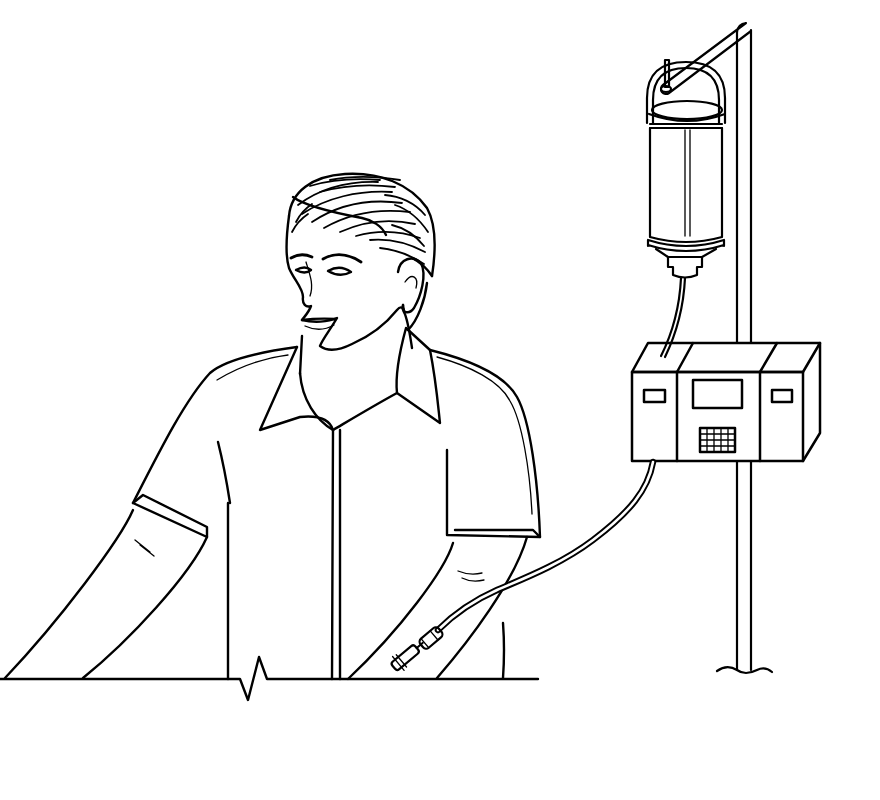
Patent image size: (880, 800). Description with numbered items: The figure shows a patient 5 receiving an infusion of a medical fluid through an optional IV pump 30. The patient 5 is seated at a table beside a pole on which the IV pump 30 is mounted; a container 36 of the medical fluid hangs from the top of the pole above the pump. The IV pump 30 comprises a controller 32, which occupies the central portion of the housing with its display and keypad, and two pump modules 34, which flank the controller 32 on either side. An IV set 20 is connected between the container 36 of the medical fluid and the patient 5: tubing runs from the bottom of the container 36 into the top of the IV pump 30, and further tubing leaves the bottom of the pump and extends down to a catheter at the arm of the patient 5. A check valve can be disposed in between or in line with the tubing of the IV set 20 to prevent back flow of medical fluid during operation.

The patient 5 is at (86, 108).
The IV set 20 is at (600, 558).
The IV pump 30 is at (790, 274).
The controller 32 is at (755, 358).
The pump module 34 is at (640, 427).
The container 36 is at (658, 187).